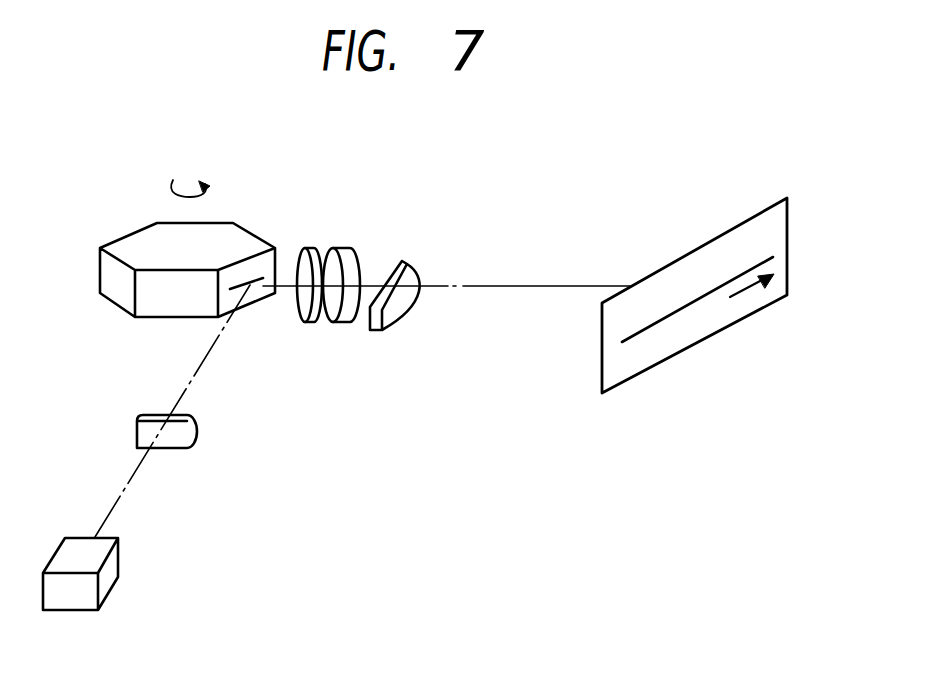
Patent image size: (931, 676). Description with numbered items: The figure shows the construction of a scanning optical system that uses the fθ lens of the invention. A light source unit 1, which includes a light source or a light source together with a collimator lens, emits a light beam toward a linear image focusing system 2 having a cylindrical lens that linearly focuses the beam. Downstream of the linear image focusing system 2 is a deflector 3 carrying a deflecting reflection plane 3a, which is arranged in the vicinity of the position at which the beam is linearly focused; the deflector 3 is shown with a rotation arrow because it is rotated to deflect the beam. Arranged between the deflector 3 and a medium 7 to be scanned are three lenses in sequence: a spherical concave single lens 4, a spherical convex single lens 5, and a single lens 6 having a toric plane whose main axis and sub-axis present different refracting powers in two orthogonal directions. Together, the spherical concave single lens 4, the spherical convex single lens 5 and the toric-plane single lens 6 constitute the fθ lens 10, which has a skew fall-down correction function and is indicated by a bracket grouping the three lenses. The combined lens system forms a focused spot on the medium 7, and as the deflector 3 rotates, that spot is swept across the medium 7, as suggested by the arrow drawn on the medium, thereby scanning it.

The light source unit 1 is at (112, 571).
The linear image focusing system 2 is at (197, 432).
The deflector 3 is at (247, 242).
The deflecting reflection plane 3a is at (252, 297).
The spherical concave single lens 4 is at (318, 250).
The spherical convex single lens 5 is at (350, 257).
The single lens having a toric plane 6 is at (403, 258).
The medium to be scanned 7 is at (692, 251).
The fθ lens 10 is at (452, 170).